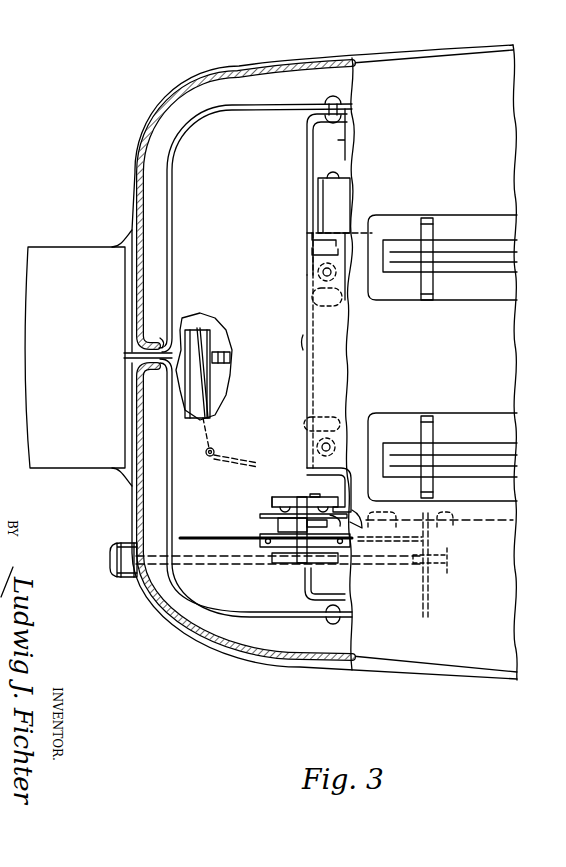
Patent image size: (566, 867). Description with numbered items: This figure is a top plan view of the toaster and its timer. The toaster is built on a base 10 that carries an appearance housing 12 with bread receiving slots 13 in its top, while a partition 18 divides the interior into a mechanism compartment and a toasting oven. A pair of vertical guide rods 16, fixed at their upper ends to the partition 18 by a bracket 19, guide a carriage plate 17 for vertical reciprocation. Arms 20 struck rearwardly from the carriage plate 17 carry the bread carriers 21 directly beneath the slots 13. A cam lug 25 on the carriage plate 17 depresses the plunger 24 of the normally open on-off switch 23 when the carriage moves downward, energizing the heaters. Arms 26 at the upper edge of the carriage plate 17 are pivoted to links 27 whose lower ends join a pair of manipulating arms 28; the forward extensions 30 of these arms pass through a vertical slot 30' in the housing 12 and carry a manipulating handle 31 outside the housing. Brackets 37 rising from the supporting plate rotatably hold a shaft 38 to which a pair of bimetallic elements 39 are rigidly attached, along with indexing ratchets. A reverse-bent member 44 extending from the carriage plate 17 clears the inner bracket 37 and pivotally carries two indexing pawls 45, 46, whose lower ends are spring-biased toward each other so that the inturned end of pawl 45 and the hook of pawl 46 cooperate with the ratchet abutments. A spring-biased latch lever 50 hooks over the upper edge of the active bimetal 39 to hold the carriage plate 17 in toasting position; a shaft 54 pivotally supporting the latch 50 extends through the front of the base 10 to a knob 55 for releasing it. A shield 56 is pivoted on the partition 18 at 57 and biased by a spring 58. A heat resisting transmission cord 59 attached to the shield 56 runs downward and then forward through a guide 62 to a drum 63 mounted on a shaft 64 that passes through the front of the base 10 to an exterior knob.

The base 10 is at (198, 638).
The appearance housing 12 is at (452, 648).
The bread receiving slots 13 is at (468, 214).
The guide rods 16 is at (338, 440).
The carriage plate 17 is at (303, 342).
The partition 18 is at (366, 520).
The bracket 19 is at (341, 360).
The arms 20 is at (350, 215).
The bread carriers 21 is at (434, 228).
The on-off switch 23 is at (343, 218).
The plunger 24 is at (312, 236).
The cam lug 25 is at (312, 252).
The arms 26 is at (344, 146).
The links 27 is at (342, 110).
The manipulating arms 28 is at (275, 106).
The forward extensions 30 is at (133, 343).
The vertical slot 30' is at (154, 328).
The manipulating handle 31 is at (80, 378).
The brackets 37 is at (272, 497).
The shaft 38 is at (305, 497).
The bimetallic elements 39 is at (185, 537).
The member 44 is at (262, 514).
The indexing pawl 45 is at (278, 524).
The indexing pawl 46 is at (343, 522).
The latch lever 50 is at (430, 597).
The shaft 54 is at (198, 565).
The knob 55 is at (111, 567).
The shield 56 is at (470, 523).
The pivot 57 is at (380, 512).
The spring 58 is at (446, 512).
The heat resisting transmission cord 59 is at (212, 400).
The guide 62 is at (213, 450).
The drum 63 is at (205, 330).
The shaft 64 is at (228, 356).